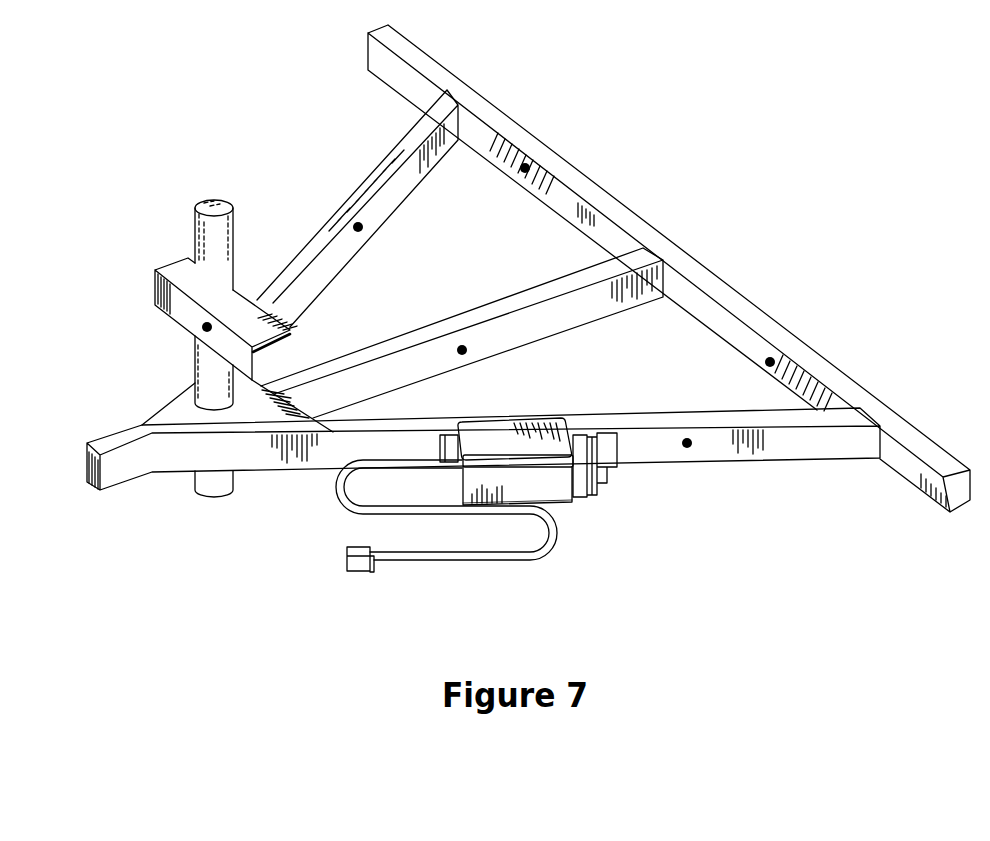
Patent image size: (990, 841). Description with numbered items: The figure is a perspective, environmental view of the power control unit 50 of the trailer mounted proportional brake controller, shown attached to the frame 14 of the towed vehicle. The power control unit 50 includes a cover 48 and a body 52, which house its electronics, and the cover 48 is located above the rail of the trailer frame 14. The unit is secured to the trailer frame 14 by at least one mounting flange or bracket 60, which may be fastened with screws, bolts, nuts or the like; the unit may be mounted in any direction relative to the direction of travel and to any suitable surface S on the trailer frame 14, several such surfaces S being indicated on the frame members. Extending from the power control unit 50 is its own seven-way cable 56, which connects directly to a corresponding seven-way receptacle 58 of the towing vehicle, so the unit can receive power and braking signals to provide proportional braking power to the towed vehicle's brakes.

The frame 14 is at (822, 437).
The cover 48 is at (537, 427).
The power control unit 50 is at (601, 515).
The body 52 is at (557, 505).
The seven-way cable 56 is at (447, 563).
The seven-way receptacle 58 is at (357, 571).
The mounting bracket 60 is at (442, 438).
The surface S is at (687, 443).